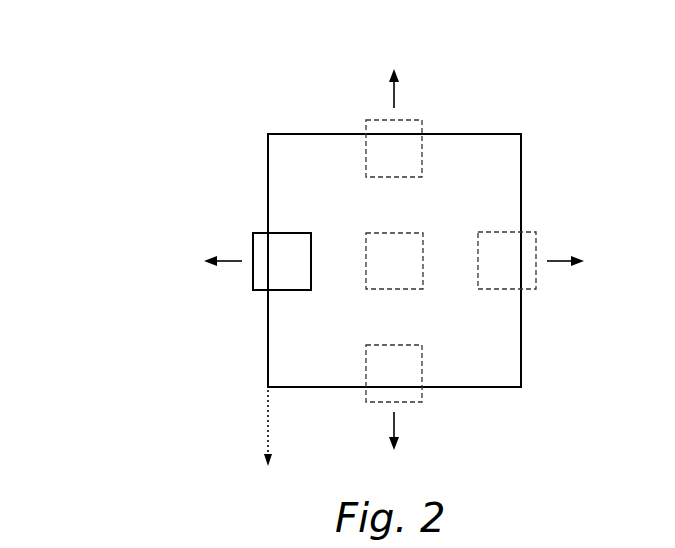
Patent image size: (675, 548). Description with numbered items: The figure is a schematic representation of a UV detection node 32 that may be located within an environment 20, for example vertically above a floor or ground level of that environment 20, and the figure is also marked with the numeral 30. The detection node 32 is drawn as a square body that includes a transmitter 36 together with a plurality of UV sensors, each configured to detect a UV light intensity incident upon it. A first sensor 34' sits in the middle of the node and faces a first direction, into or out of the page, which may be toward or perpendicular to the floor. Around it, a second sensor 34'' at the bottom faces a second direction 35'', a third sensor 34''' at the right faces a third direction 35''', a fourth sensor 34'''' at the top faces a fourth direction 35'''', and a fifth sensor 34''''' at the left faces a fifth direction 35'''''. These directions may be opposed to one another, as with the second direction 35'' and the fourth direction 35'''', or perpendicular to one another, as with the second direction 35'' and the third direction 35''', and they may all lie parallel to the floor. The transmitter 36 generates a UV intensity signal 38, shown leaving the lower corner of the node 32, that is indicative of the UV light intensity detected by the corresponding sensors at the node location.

The environment 20 is at (116, 86).
The enclosure 30 is at (110, 130).
The UV detection node 32 is at (180, 114).
The first sensor 34' is at (413, 280).
The second sensor 34'' is at (424, 390).
The third sensor 34''' is at (536, 239).
The fourth sensor 34'''' is at (370, 128).
The fifth sensor 34''''' is at (259, 286).
The second direction 35'' is at (365, 431).
The third direction 35''' is at (573, 291).
The fourth direction 35'''' is at (429, 88).
The fifth direction 35''''' is at (209, 241).
The transmitter 36 is at (511, 364).
The UV intensity signal 38 is at (263, 428).